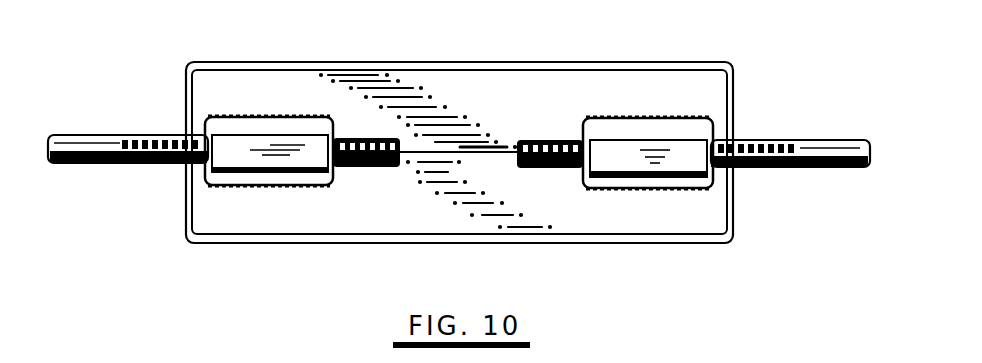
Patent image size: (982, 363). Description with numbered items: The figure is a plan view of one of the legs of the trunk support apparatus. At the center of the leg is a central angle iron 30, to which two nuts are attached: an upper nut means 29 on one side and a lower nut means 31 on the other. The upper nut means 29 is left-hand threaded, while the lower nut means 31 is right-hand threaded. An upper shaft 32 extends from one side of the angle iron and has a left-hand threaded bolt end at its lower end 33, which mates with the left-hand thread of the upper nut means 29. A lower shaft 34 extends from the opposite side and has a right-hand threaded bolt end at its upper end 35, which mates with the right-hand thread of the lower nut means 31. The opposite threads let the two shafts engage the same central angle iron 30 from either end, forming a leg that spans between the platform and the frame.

The upper nut means 29 is at (258, 134).
The central angle iron 30 is at (490, 60).
The lower nut means 31 is at (643, 180).
The upper shaft 32 is at (95, 134).
The lower end of upper shaft 33 is at (371, 168).
The lower shaft 34 is at (840, 173).
The upper end of lower shaft 35 is at (548, 136).